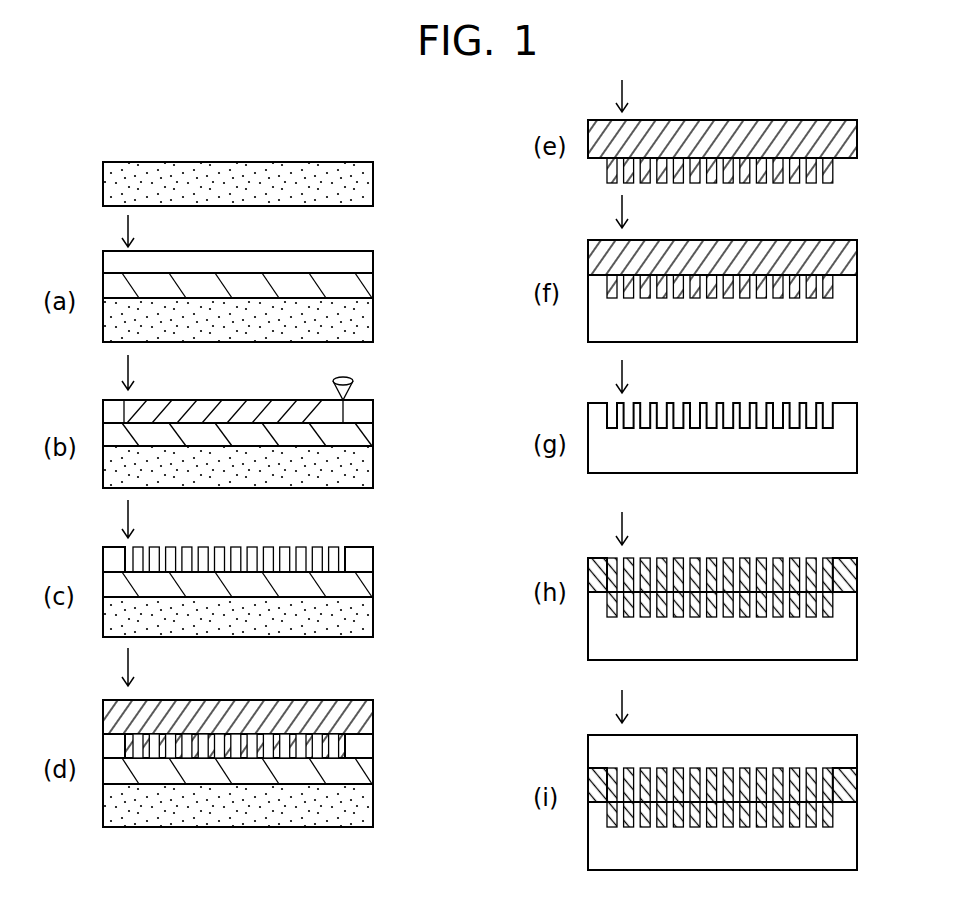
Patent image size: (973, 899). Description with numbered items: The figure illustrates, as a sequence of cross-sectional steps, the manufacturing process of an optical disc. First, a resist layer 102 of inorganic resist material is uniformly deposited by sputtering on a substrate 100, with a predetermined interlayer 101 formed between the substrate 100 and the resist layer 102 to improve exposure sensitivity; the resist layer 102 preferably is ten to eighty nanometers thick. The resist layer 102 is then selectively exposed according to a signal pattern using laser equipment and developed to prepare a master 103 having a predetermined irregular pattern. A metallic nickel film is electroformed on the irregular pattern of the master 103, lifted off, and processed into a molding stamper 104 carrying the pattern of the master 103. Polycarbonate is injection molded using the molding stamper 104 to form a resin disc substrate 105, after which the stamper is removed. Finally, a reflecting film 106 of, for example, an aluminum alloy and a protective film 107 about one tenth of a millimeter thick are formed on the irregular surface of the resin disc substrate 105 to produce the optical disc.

The substrate 100 is at (373, 174).
The interlayer 101 is at (373, 280).
The resist layer 102 is at (373, 252).
The master 103 is at (393, 572).
The molding stamper 104 is at (373, 710).
The resin disc substrate 105 is at (857, 290).
The reflecting film 106 is at (857, 570).
The protective film 107 is at (857, 738).